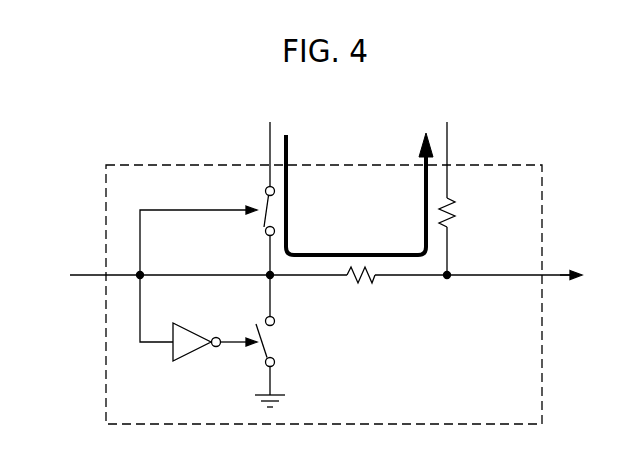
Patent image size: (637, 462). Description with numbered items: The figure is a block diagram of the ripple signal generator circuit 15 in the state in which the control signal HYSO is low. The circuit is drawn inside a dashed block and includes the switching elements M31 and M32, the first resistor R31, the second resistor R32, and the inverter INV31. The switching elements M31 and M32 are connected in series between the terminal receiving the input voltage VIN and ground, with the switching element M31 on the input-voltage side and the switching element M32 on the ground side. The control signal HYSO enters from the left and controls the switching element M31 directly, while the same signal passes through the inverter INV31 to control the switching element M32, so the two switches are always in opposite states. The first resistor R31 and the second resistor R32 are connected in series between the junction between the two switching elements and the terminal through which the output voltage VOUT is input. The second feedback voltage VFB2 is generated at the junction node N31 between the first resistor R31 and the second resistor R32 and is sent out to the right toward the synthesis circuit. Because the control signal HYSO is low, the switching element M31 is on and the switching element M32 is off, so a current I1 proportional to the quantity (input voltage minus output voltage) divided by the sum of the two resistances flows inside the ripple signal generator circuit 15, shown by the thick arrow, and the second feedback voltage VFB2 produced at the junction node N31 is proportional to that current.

The ripple signal generator circuit 15 is at (172, 165).
The control signal HYSO is at (80, 276).
The input voltage VIN is at (270, 145).
The output voltage VOUT is at (447, 150).
The second feedback voltage VFB2 is at (593, 276).
The switching element M31 is at (293, 231).
The switching element M32 is at (283, 341).
The inverter INV31 is at (188, 357).
The current I1 is at (383, 252).
The first resistor R31 is at (370, 288).
The second resistor R32 is at (457, 209).
The junction node N31 is at (450, 282).